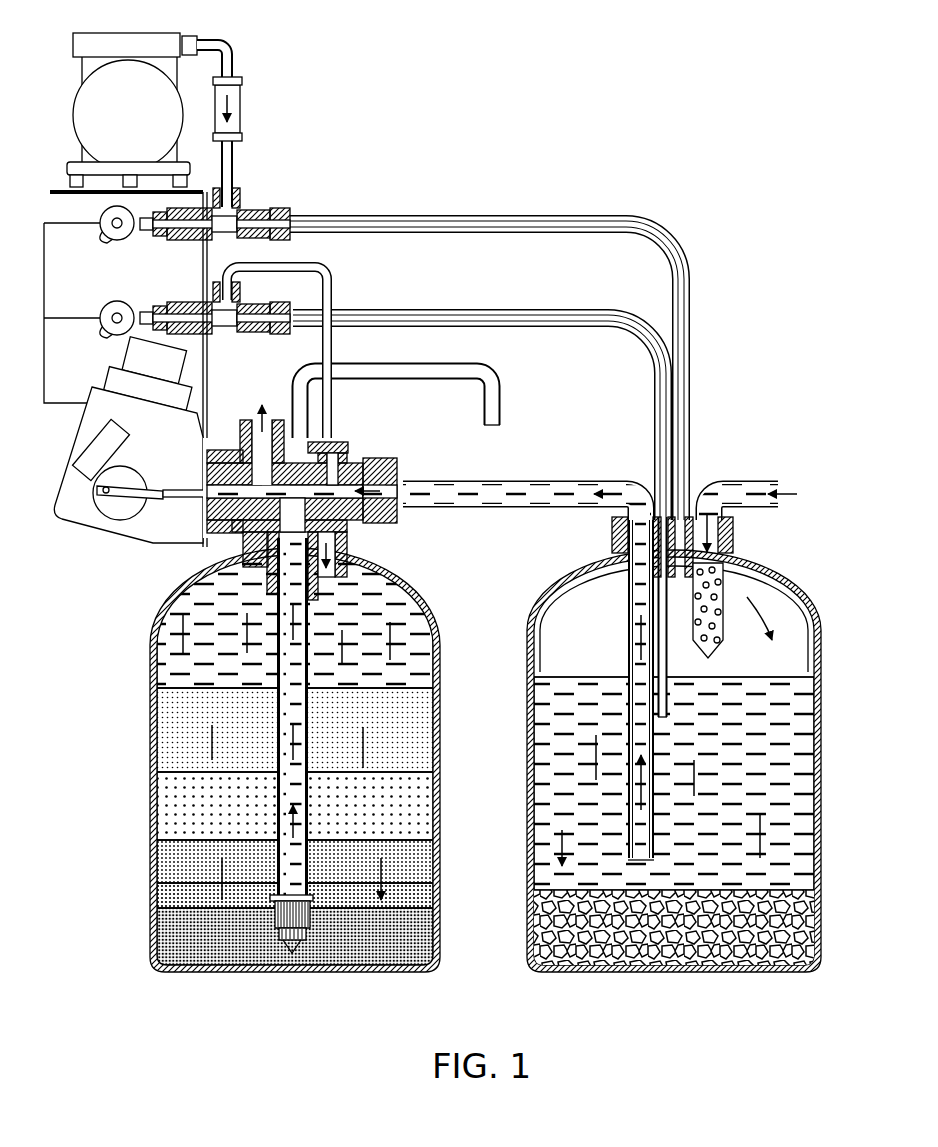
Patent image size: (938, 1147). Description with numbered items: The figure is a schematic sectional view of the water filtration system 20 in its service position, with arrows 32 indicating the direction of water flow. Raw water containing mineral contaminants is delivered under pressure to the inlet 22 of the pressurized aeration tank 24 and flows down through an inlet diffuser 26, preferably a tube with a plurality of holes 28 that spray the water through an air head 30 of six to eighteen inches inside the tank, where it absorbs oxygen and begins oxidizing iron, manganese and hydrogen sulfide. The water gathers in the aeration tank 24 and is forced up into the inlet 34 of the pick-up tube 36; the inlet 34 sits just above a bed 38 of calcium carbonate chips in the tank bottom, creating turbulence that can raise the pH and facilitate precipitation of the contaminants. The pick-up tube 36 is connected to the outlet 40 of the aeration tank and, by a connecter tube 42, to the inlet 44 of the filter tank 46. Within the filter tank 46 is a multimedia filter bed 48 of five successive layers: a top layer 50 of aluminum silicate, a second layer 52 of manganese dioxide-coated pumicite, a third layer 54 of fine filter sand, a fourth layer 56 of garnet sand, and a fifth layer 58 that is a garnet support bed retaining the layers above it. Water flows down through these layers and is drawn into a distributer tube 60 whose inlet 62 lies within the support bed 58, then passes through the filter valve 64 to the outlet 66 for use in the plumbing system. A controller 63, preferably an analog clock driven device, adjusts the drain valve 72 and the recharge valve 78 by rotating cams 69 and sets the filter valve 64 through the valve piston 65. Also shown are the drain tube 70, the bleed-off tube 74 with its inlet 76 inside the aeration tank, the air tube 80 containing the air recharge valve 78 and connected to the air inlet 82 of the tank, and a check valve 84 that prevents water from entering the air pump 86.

The water filtration system 20 is at (447, 156).
The inlet 22 is at (730, 516).
The aeration tank 24 is at (810, 603).
The inlet diffuser 26 is at (718, 593).
The holes 28 is at (720, 613).
The air head 30 is at (821, 645).
The arrows 32 is at (365, 733).
The inlet 34 is at (643, 865).
The pick-up tube 36 is at (630, 782).
The bed of calcium carbonate chips 38 is at (560, 890).
The outlet 40 is at (632, 510).
The connecter tube 42 is at (500, 512).
The inlet 44 is at (347, 530).
The filter tank 46 is at (432, 600).
The multimedia filter bed 48 is at (392, 686).
The top layer 50 is at (160, 725).
The second layer 52 is at (160, 797).
The third layer 54 is at (160, 862).
The fourth layer 56 is at (160, 896).
The garnet support bed 58 is at (160, 930).
The distributer tube 60 is at (275, 687).
The inlet 62 is at (312, 927).
The controller 63 is at (82, 430).
The filter valve 64 is at (355, 453).
The valve piston 65 is at (165, 540).
The outlet 66 is at (250, 412).
The cams 69 is at (104, 213).
The drain tube 70 is at (503, 390).
The drain valve 72 is at (257, 303).
The bleed-off tube 74 is at (753, 630).
The inlet 76 is at (662, 720).
The air recharge valve 78 is at (256, 210).
The air tube 80 is at (553, 216).
The air inlet 82 is at (740, 563).
The check valve 84 is at (242, 100).
The air pump 86 is at (142, 127).